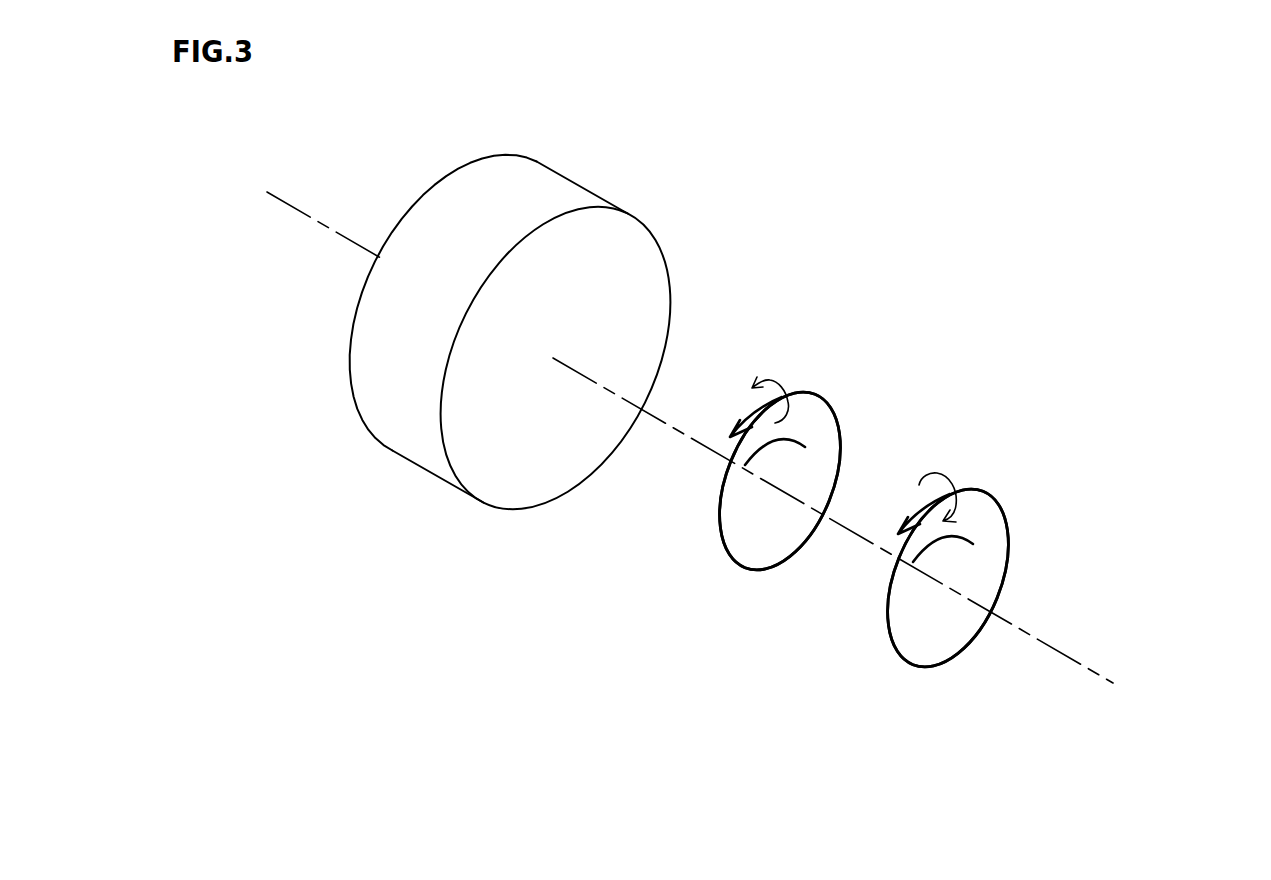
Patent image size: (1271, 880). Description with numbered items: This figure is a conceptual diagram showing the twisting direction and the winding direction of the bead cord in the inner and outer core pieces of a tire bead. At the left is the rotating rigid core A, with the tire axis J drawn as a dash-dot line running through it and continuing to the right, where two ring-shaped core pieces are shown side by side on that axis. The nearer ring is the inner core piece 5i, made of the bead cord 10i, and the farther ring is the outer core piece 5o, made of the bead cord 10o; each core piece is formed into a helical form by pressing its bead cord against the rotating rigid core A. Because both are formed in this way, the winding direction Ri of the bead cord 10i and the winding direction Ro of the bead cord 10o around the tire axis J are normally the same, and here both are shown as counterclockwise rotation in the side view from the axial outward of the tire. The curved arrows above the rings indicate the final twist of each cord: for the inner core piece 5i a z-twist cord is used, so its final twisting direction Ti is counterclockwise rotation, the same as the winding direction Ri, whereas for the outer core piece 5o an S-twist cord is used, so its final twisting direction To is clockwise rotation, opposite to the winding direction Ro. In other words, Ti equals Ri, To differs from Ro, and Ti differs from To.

The rigid core A is at (592, 185).
The tire axis J is at (1060, 645).
The inner core piece 5i is at (730, 605).
The outer core piece 5o is at (898, 700).
The bead cord 10i is at (777, 562).
The bead cord 10o is at (947, 655).
The final twisting direction Ti is at (772, 378).
The final twisting direction To is at (940, 475).
The winding direction Ri is at (722, 520).
The winding direction Ro is at (888, 617).